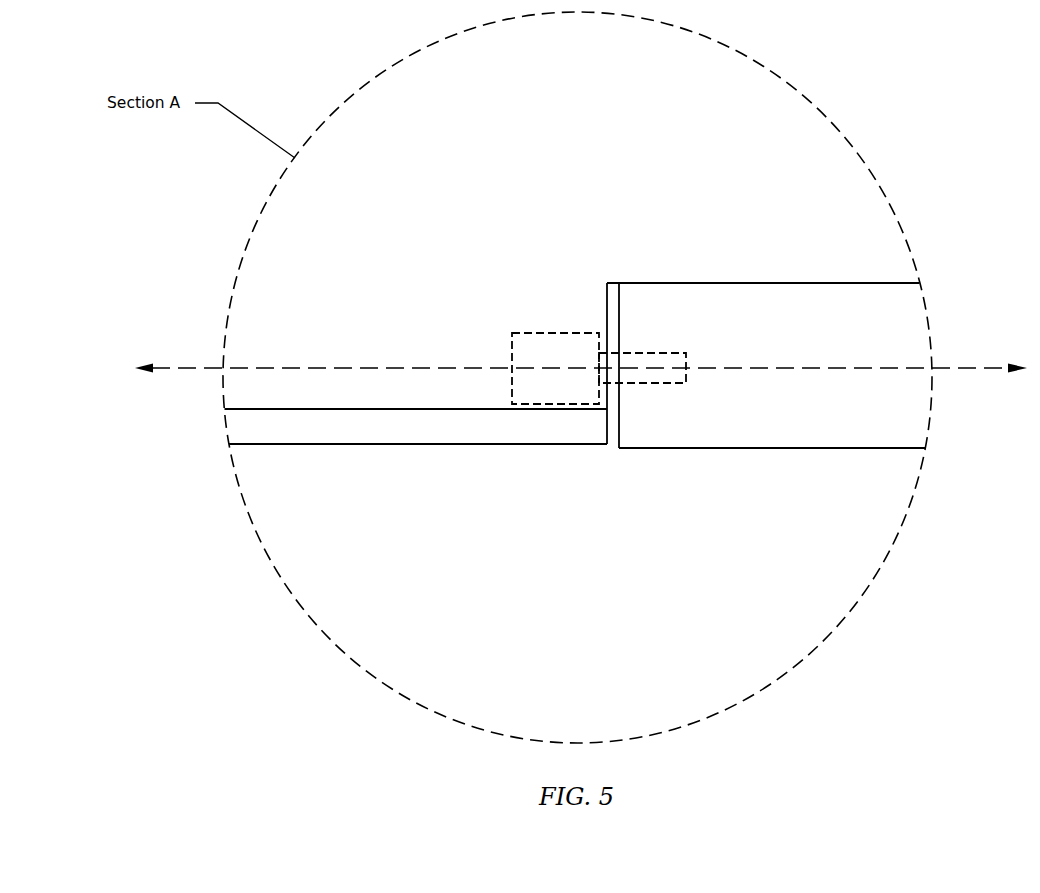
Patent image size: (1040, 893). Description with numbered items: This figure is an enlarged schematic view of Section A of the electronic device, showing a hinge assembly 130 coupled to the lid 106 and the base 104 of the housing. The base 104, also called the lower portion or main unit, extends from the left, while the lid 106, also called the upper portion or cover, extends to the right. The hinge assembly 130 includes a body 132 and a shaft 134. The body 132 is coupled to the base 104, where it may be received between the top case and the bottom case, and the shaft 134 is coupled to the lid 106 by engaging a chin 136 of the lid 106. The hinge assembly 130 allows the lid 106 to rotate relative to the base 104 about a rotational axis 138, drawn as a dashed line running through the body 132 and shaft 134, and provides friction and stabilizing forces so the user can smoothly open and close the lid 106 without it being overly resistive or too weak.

The base 104 is at (416, 460).
The lid 106 is at (766, 399).
The hinge assembly 130 is at (502, 344).
The body 132 is at (544, 344).
The shaft 134 is at (664, 347).
The chin 136 is at (616, 379).
The rotational axis 138 is at (572, 348).